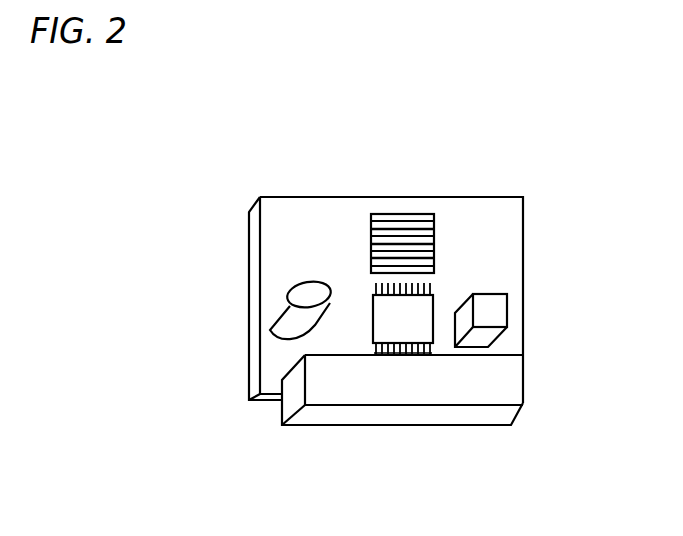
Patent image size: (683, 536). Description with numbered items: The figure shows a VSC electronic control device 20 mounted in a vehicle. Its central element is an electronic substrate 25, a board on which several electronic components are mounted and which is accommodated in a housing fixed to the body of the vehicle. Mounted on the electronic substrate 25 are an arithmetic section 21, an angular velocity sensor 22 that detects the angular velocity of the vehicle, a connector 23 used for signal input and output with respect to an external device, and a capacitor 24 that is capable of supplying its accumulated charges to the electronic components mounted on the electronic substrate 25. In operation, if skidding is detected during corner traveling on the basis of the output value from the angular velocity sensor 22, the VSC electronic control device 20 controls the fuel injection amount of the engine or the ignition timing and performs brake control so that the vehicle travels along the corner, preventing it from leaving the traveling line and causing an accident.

The VSC electronic control device 20 is at (398, 162).
The arithmetic section 21 is at (403, 303).
The angular velocity sensor 22 is at (427, 240).
The connector 23 is at (363, 385).
The capacitor 24 is at (299, 300).
The electronic substrate 25 is at (508, 338).